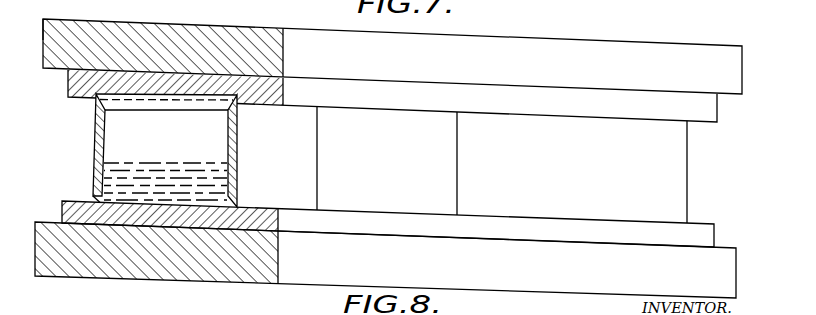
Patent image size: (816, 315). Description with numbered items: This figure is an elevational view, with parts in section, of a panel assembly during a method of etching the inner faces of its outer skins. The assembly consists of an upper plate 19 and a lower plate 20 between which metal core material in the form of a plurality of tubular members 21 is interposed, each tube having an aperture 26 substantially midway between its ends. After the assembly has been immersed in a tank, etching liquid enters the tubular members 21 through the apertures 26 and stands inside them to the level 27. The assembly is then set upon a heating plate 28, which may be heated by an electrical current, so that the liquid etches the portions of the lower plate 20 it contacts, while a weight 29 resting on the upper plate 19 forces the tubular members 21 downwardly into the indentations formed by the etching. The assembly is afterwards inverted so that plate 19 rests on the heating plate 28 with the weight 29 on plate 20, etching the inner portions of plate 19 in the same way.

The upper plate 19 is at (68, 80).
The lower plate 20 is at (62, 208).
The tubular member 21 is at (457, 157).
The aperture 26 is at (392, 47).
The level of etching liquid 27 is at (227, 165).
The heating plate 28 is at (92, 268).
The weight 29 is at (43, 32).